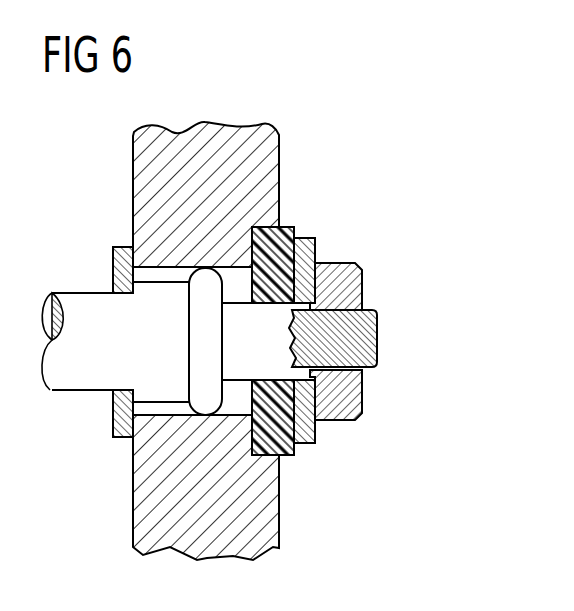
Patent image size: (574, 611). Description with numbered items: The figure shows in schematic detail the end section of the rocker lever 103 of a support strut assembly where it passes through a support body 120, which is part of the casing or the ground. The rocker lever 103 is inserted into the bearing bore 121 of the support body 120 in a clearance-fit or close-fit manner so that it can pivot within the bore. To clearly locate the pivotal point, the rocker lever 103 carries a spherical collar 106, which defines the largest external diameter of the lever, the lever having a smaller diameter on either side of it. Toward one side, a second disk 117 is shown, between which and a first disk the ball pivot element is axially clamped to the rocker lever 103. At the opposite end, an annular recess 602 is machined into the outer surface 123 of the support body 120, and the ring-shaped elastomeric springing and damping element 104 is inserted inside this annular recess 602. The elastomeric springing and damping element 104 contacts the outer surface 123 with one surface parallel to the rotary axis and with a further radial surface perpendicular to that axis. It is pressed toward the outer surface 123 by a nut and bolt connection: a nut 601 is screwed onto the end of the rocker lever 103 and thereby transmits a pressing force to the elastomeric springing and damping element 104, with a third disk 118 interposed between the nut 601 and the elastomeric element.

The support body 120 is at (207, 343).
The outer surface 123 is at (287, 507).
The second disk 117 is at (121, 411).
The bearing bore 121 is at (235, 288).
The spherical collar 106 is at (207, 403).
The annular recess 602 is at (302, 331).
The elastomeric springing and damping element 104 is at (282, 457).
The third disk 118 is at (318, 247).
The nut 601 is at (352, 285).
The rocker lever 103 is at (365, 338).